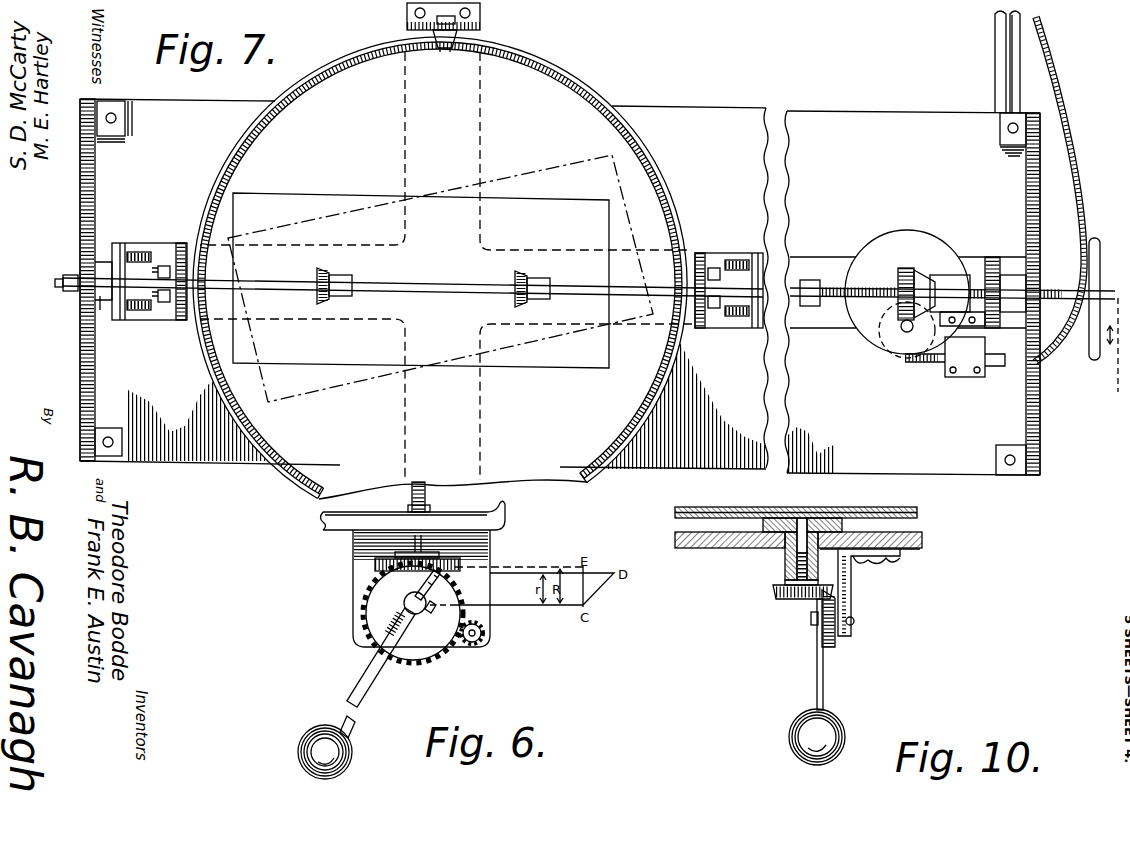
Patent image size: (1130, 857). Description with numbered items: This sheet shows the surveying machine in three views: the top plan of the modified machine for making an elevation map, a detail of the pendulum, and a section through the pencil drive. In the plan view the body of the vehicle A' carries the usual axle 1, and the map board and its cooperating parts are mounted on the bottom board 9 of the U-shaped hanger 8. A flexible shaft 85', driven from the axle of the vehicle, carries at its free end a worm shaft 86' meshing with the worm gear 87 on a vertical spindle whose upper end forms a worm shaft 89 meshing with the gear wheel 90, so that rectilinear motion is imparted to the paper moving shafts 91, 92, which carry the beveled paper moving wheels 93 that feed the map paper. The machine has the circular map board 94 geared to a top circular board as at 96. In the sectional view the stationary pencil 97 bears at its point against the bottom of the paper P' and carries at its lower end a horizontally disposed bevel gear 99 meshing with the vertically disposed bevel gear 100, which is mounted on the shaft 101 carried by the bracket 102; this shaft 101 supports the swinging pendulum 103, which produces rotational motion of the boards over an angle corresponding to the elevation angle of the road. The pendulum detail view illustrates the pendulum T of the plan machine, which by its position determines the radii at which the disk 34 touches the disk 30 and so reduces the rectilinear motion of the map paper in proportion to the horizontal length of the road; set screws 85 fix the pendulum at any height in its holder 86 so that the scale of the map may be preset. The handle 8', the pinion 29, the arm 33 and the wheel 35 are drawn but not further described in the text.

In FIG. 7, the axle 1 is at (1000, 50).
In FIG. 7, the U-shaped hanger 8 is at (73, 286).
In FIG. 7, the crank handle 8' is at (1103, 323).
In FIG. 6, the bottom board 9 is at (503, 516).
In FIG. 6, the pinion 29 is at (488, 642).
In FIG. 6, the disk 30 is at (378, 600).
In FIG. 6, the lever arm 33 is at (367, 645).
In FIG. 6, the disk 34 is at (395, 569).
In FIG. 6, the worm wheel 35 is at (400, 553).
In FIG. 6, the set screws 85 is at (413, 634).
In FIG. 7, the flexible shaft 85' is at (1073, 190).
In FIG. 6, the holder 86 is at (361, 622).
In FIG. 7, the worm shaft 86' is at (963, 382).
In FIG. 7, the worm gear 87 is at (878, 356).
In FIG. 7, the worm shaft 89 is at (906, 346).
In FIG. 7, the gear wheel 90 is at (906, 268).
In FIG. 7, the paper moving shaft 91 is at (838, 298).
In FIG. 7, the paper moving shaft 92 is at (600, 295).
In FIG. 7, the beveled paper moving wheels 93 is at (327, 272).
In FIG. 7, the circular map board 94 is at (292, 478).
In FIG. 10, the circular map board 94 is at (677, 516).
In FIG. 7, the gearing 96 is at (448, 50).
In FIG. 10, the gearing 96 is at (785, 566).
In FIG. 10, the stationary pencil 97 is at (815, 516).
In FIG. 10, the horizontally disposed bevel gear 99 is at (790, 601).
In FIG. 10, the vertically disposed bevel gear 100 is at (836, 648).
In FIG. 10, the shaft 101 is at (854, 622).
In FIG. 10, the bracket 102 is at (856, 566).
In FIG. 10, the swinging pendulum 103 is at (838, 728).
In FIG. 7, the vehicle body A' is at (425, 304).
In FIG. 7, the paper P' is at (446, 266).
In FIG. 10, the paper P' is at (820, 507).
In FIG. 6, the pendulum T is at (298, 744).